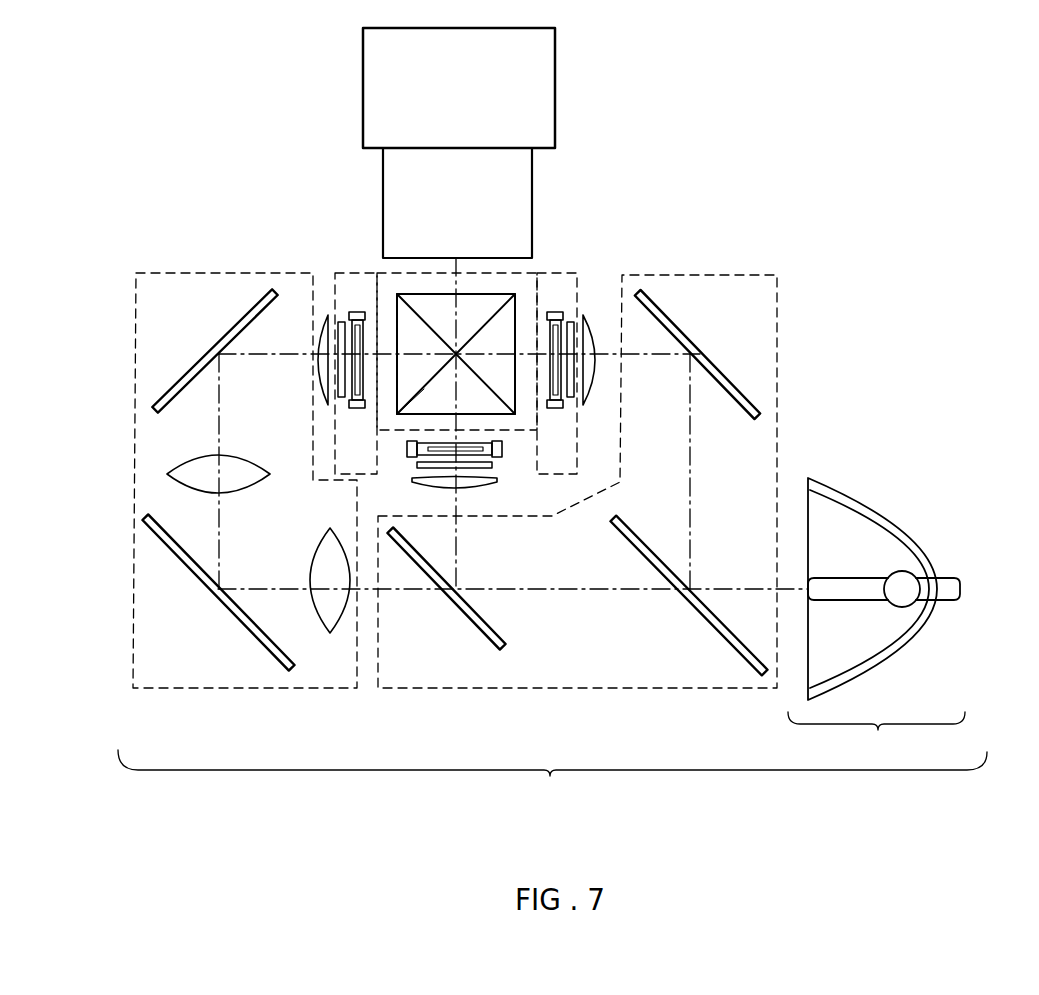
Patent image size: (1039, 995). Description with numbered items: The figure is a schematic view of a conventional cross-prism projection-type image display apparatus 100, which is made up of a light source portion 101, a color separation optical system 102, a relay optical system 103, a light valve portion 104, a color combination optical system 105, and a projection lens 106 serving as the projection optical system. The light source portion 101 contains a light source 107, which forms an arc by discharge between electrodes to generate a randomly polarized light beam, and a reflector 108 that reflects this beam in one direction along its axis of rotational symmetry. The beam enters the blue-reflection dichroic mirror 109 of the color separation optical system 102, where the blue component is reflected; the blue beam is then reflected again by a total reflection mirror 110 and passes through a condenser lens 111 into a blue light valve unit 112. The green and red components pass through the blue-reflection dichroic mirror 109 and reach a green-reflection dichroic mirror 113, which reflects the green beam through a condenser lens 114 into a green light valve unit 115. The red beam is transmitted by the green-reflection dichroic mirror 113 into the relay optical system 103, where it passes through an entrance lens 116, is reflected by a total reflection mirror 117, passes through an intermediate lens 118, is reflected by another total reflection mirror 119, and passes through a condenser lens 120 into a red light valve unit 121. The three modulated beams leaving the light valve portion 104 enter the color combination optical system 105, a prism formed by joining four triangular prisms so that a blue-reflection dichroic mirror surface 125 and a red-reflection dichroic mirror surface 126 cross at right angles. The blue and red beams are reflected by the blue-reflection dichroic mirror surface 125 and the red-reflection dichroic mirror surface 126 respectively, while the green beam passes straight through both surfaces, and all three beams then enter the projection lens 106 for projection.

The cross-prism projection-type image display apparatus 100 is at (552, 781).
The light source portion 101 is at (891, 602).
The color separation optical system 102 is at (555, 690).
The relay optical system 103 is at (245, 689).
The light valve portion 104 is at (558, 273).
The color combination optical system 105 is at (503, 293).
The projection lens 106 is at (555, 92).
The light source 107 is at (908, 573).
The reflector 108 is at (855, 500).
The blue-reflection dichroic mirror 109 is at (704, 616).
The total reflection mirror 110 is at (708, 362).
The condenser lens 111 is at (590, 315).
The blue light valve unit 112 is at (557, 408).
The green-reflection dichroic mirror 113 is at (472, 619).
The condenser lens 114 is at (464, 491).
The green light valve unit 115 is at (502, 449).
The entrance lens 116 is at (330, 633).
The total reflection mirror 117 is at (240, 620).
The intermediate lens 118 is at (180, 483).
The total reflection mirror 119 is at (182, 377).
The condenser lens 120 is at (326, 315).
The red light valve unit 121 is at (357, 312).
The blue-reflection dichroic mirror surface 125 is at (490, 400).
The red-reflection dichroic mirror surface 126 is at (424, 395).